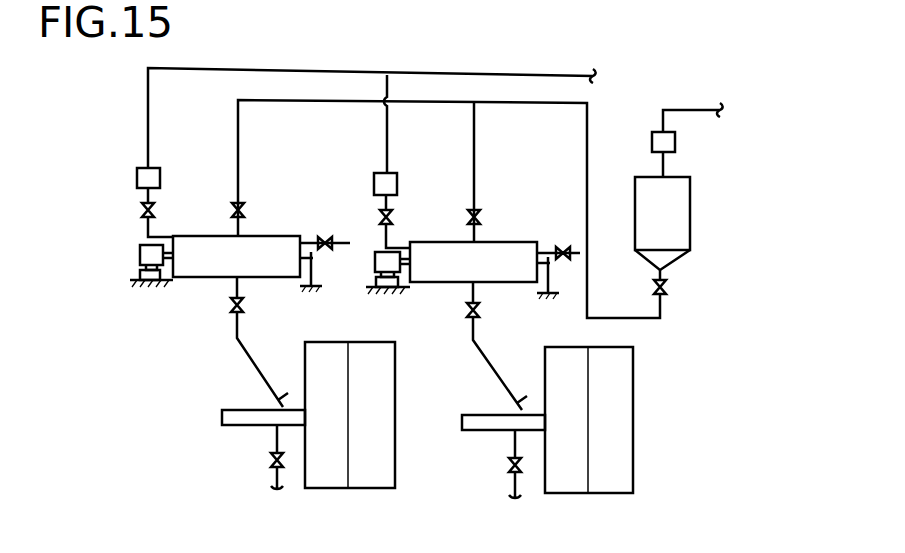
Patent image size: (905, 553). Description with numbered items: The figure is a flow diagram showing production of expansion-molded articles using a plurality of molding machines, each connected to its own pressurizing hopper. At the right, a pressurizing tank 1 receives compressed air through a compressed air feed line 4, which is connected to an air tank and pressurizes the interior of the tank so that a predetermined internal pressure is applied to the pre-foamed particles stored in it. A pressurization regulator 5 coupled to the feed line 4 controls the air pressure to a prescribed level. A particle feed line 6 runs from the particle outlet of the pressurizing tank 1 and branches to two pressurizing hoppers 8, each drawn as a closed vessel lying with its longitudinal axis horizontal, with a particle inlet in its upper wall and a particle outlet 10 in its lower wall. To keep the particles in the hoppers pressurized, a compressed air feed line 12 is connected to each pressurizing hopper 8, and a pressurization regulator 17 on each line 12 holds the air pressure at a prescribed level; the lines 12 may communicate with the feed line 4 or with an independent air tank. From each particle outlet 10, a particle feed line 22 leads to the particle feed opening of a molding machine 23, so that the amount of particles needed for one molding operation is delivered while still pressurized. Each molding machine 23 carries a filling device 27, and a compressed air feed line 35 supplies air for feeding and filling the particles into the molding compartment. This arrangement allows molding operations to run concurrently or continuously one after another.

The pressurizing tank 1 is at (690, 218).
The compressed air feed line 4 is at (690, 110).
The pressurization regulator 5 is at (675, 142).
The particle feed line 6 is at (238, 127).
The pressurizing hopper 8 is at (273, 236).
The particle outlet 10 is at (237, 283).
The compressed air feed line 12 is at (148, 126).
The pressurization regulator 17 is at (160, 180).
The particle feed line 22 is at (238, 345).
The molding machine 23 is at (395, 455).
The filling device 27 is at (240, 410).
The compressed air feed line 35 is at (275, 475).